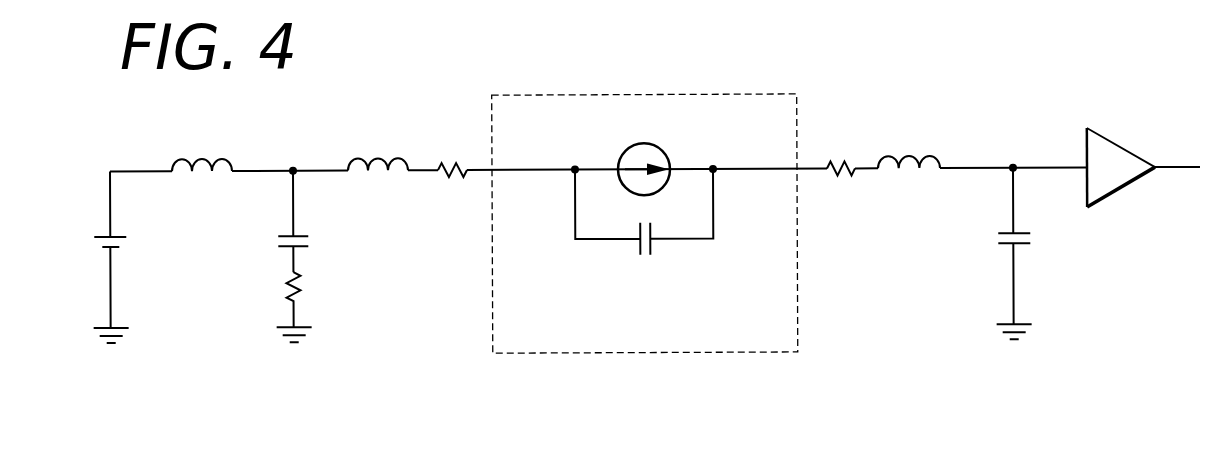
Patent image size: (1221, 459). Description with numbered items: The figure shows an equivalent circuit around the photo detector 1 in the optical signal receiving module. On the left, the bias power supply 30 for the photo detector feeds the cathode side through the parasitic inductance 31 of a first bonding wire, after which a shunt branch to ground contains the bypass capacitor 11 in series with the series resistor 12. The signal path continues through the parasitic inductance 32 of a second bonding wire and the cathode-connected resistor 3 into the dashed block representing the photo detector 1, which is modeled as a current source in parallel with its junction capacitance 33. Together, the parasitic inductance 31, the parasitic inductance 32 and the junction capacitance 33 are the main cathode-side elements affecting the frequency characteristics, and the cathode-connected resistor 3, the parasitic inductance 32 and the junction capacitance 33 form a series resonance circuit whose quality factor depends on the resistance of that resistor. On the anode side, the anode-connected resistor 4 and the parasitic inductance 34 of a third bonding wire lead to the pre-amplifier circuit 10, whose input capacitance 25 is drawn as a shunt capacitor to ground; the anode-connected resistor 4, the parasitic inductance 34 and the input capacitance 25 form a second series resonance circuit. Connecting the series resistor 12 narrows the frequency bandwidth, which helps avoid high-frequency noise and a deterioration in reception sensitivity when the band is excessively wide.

The photo detector 1 is at (645, 251).
The cathode-connected resistor 3 is at (452, 165).
The anode-connected resistor 4 is at (838, 164).
The pre-amplifier circuit 10 is at (1118, 150).
The bypass capacitor 11 is at (276, 240).
The series resistor 12 is at (286, 284).
The input capacitance of the pre-amplifier circuit 25 is at (996, 240).
The bias power supply for photo detector 30 is at (94, 237).
The parasitic inductance due to the bonding wire 31 is at (208, 158).
The parasitic inductance due to the bonding wire 32 is at (378, 159).
The junction capacitance of the photo detector 33 is at (652, 232).
The parasitic inductance due to the bonding wire 34 is at (912, 158).